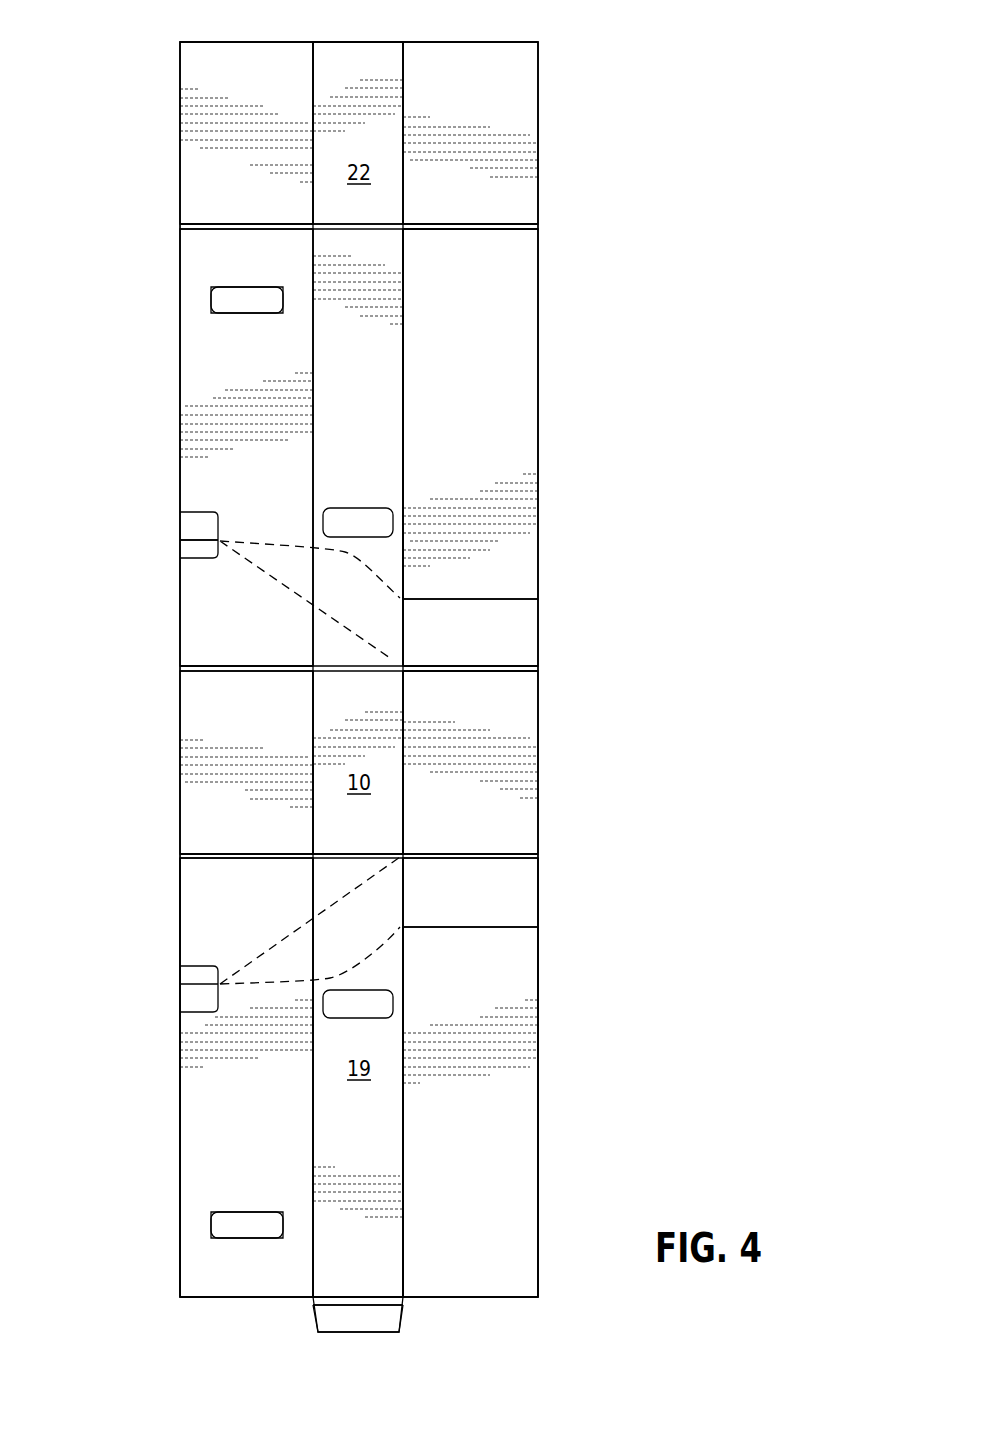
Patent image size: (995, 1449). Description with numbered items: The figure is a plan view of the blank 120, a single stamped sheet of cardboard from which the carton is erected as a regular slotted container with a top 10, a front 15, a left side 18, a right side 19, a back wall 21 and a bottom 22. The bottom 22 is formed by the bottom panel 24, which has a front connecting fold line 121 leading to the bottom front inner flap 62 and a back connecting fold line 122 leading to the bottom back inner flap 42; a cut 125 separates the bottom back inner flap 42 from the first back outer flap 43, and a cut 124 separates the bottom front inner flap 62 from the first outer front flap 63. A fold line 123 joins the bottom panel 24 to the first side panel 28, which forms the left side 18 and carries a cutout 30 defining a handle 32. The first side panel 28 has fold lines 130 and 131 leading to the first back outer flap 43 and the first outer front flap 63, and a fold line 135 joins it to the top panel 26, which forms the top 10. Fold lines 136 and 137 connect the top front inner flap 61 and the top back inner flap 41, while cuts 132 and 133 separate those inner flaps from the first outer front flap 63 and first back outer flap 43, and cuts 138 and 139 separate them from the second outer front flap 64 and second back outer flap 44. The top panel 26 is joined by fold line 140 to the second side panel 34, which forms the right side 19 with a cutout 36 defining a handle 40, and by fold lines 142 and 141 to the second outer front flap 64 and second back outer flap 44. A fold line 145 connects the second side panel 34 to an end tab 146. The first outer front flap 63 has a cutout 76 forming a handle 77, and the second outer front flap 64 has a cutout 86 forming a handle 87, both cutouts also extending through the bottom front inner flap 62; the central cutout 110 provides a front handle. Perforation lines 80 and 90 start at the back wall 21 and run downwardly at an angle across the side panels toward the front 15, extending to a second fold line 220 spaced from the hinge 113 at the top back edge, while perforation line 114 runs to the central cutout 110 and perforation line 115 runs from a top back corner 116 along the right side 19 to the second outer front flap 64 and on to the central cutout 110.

The blank 120 is at (549, 53).
The bottom 22 is at (358, 133).
The top 10 is at (358, 762).
The right side 19 is at (358, 1077).
The front connecting fold line 121 is at (312, 112).
The bottom panel 24 is at (387, 45).
The back connecting fold line 122 is at (403, 105).
The bottom front inner flap 62 is at (180, 107).
The bottom back inner flap 42 is at (540, 130).
The cut 124 is at (213, 224).
The fold line 123 is at (377, 224).
The cut 125 is at (478, 231).
The handle 77 is at (238, 287).
The cutout 76 is at (211, 300).
The first back outer flap 43 is at (538, 293).
The fold line 131 is at (313, 353).
The first side panel 28 is at (375, 353).
The left side 18 is at (367, 378).
The first outer front flap 63 is at (180, 427).
The fold line 130 is at (440, 451).
The perforation line 80 is at (352, 560).
The cutout 30 is at (403, 502).
The central cutout 110 is at (183, 512).
The handle 32 is at (403, 563).
The perforation line 114 is at (280, 577).
The fold line 135 is at (403, 667).
The hinge 113 is at (403, 668).
The cut 132 is at (230, 668).
The cut 133 is at (500, 668).
The top panel 26 is at (388, 700).
The fold line 136 is at (313, 693).
The fold line 137 is at (403, 752).
The top front inner flap 61 is at (180, 749).
The top back inner flap 41 is at (538, 756).
The fold line 140 is at (343, 854).
The cut 138 is at (230, 854).
The cut 139 is at (500, 854).
The perforation line 115 is at (287, 947).
The top back corner 116 is at (403, 858).
The second outer front flap 64 is at (180, 923).
The second back outer flap 44 is at (540, 908).
The second fold line 220 is at (540, 923).
The cutout 36 is at (403, 983).
The perforation line 90 is at (350, 965).
The handle 40 is at (387, 1012).
The fold line 141 is at (403, 1085).
The fold line 142 is at (313, 1067).
The back wall 21 is at (538, 1111).
The front 15 is at (180, 1131).
The second side panel 34 is at (367, 1132).
The handle 87 is at (240, 1212).
The cutout 86 is at (211, 1225).
The fold line 145 is at (313, 1302).
The end tab 146 is at (350, 1333).